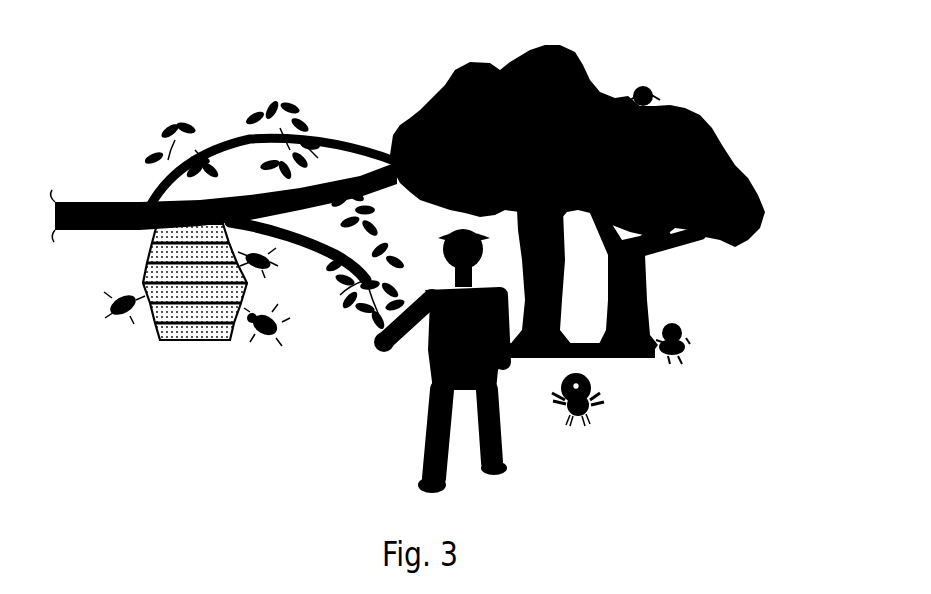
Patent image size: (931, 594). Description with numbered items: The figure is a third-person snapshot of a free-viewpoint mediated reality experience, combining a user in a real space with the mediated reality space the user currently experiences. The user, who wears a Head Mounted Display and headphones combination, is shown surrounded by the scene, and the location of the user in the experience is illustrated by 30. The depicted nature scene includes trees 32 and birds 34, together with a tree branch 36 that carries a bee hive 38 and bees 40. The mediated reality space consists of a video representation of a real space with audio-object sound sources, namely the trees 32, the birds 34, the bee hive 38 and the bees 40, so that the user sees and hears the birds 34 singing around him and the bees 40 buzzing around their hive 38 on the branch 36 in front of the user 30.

The location of the user 30 is at (430, 367).
The trees 32 is at (572, 58).
The birds 34 is at (647, 88).
The tree branch 36 is at (97, 200).
The bee hive 38 is at (170, 338).
The bees 40 is at (107, 308).